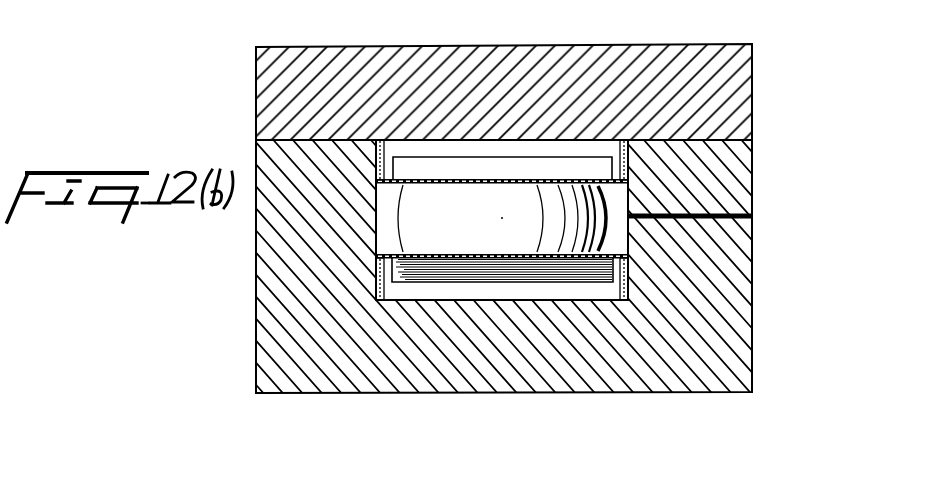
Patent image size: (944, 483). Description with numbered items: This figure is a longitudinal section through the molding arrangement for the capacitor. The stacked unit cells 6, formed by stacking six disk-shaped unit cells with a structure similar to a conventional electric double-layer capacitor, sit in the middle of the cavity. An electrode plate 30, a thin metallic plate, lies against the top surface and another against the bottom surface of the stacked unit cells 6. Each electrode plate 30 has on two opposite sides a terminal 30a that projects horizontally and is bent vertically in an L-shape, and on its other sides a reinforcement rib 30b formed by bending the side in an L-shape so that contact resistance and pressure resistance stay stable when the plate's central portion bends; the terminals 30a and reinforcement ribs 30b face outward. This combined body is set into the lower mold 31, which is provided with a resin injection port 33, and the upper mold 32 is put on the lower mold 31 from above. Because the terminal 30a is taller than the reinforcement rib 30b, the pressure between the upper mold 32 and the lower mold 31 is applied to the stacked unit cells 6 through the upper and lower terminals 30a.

The stacked unit cells 6 is at (576, 227).
The electrode plate 30 is at (471, 180).
The terminal 30a is at (380, 162).
The reinforcement rib 30b is at (502, 160).
The lower mold 31 is at (527, 378).
The upper mold 32 is at (262, 96).
The resin injection port 33 is at (752, 216).